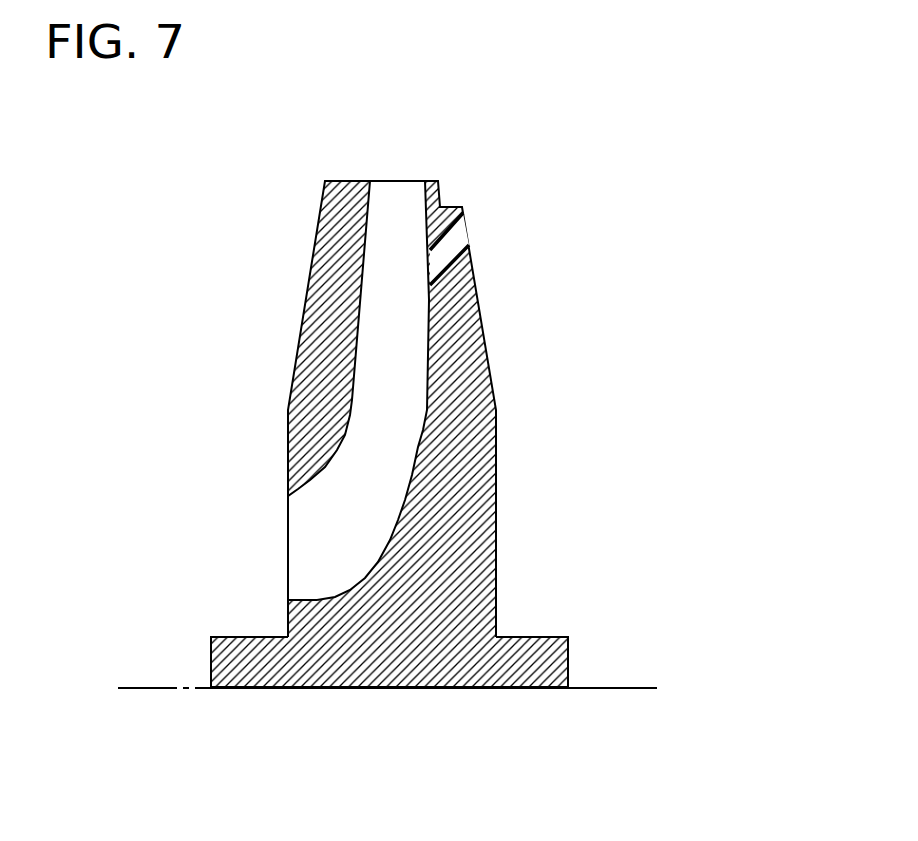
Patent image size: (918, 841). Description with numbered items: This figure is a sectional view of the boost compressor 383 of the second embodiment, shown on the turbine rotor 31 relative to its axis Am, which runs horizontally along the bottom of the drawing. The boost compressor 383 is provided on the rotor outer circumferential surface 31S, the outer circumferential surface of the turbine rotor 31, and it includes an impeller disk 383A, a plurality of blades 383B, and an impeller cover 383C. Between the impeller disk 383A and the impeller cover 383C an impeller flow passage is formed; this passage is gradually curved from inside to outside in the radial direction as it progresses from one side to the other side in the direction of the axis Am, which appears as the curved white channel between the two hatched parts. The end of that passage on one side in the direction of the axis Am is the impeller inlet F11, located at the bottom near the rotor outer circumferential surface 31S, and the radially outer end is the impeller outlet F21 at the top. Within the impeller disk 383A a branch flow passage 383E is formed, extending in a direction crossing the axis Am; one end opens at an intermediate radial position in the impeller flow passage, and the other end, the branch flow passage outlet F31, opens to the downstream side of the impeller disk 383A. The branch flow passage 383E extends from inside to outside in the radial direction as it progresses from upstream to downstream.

The boost compressor 383 is at (533, 181).
The impeller disk 383A is at (468, 533).
The blades 383B is at (392, 427).
The impeller cover 383C is at (323, 312).
The branch flow passage 383E is at (437, 264).
The impeller inlet F11 is at (288, 601).
The impeller outlet F21 is at (370, 181).
The branch flow passage outlet F31 is at (468, 241).
The turbine rotor 31 is at (255, 663).
The rotor outer circumferential surface 31S is at (509, 637).
The axis Am is at (592, 687).